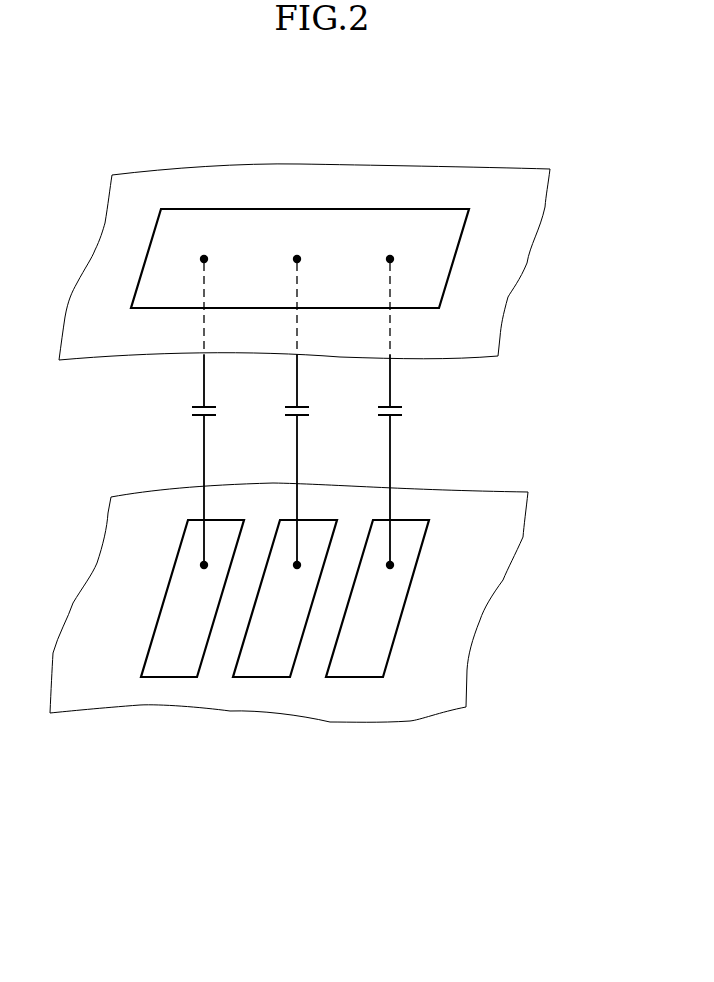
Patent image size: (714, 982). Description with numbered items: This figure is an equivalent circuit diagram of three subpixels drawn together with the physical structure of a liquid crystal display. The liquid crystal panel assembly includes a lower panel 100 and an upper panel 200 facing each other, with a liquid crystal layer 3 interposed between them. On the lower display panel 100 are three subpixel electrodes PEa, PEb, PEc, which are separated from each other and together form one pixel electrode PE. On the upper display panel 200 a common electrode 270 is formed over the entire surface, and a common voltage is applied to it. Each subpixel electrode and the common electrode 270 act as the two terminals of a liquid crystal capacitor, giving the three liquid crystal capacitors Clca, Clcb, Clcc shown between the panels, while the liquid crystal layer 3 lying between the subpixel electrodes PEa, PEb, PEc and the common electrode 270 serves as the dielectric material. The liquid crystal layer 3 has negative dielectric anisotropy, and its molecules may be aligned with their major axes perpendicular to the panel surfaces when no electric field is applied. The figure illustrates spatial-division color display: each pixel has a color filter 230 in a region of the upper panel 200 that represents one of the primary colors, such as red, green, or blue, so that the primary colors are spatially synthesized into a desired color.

The upper panel 200 is at (338, 242).
The common electrode 270 is at (545, 207).
The color filter 230 is at (413, 209).
The liquid crystal layer 3 is at (212, 414).
The liquid crystal capacitor Clca is at (184, 414).
The liquid crystal capacitor Clcb is at (277, 414).
The liquid crystal capacitor Clcc is at (370, 414).
The lower panel 100 is at (315, 657).
The pixel electrode PE is at (285, 676).
The subpixel electrode PEa is at (170, 677).
The subpixel electrode PEb is at (260, 677).
The subpixel electrode PEc is at (377, 653).